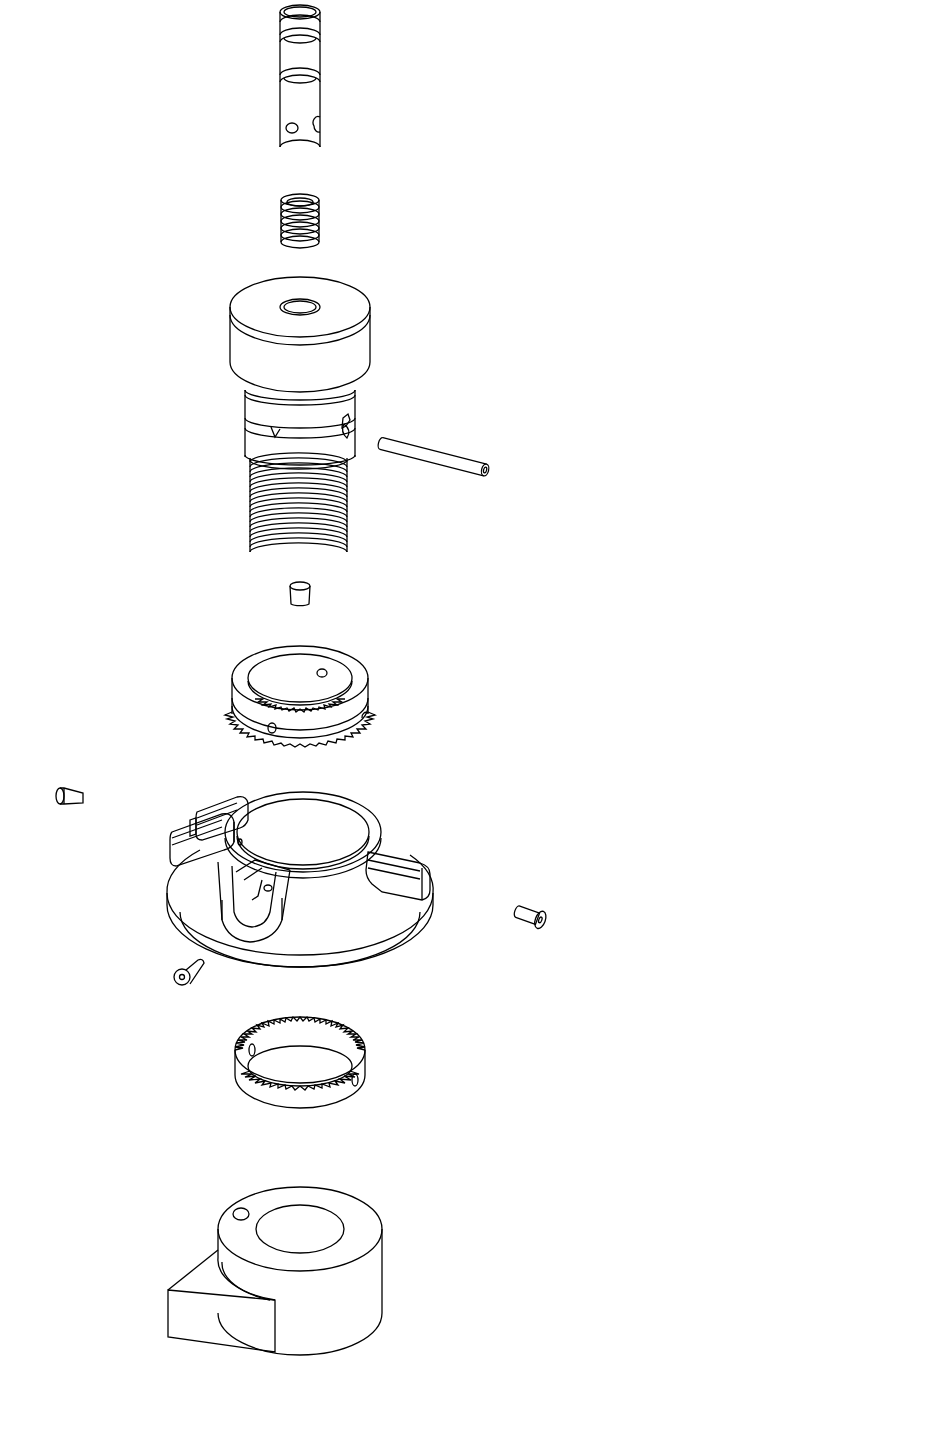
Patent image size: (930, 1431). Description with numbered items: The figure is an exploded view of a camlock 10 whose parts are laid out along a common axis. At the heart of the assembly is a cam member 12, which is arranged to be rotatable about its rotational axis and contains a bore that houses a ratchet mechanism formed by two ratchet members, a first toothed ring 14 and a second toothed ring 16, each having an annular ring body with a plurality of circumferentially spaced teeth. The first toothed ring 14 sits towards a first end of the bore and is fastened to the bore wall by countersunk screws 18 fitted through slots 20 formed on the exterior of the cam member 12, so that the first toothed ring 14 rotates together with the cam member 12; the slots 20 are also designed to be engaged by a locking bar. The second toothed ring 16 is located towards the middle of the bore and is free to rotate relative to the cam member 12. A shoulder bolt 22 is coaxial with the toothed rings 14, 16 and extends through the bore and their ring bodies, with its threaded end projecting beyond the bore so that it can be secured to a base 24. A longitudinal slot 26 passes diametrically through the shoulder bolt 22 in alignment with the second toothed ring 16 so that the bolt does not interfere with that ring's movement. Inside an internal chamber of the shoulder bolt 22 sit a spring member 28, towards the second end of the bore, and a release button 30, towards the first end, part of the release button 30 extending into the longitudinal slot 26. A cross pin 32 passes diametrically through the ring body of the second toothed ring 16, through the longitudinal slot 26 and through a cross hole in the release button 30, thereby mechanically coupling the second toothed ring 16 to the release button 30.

The camlock 10 is at (472, 196).
The cam member 12 is at (382, 826).
The first toothed ring 14 is at (240, 670).
The second toothed ring 16 is at (245, 1086).
The countersunk screws 18 is at (176, 968).
The slots 20 is at (186, 808).
The shoulder bolt 22 is at (255, 305).
The base 24 is at (360, 1217).
The longitudinal slot 26 is at (352, 422).
The spring member 28 is at (282, 218).
The release button 30 is at (295, 107).
The cross pin 32 is at (465, 456).